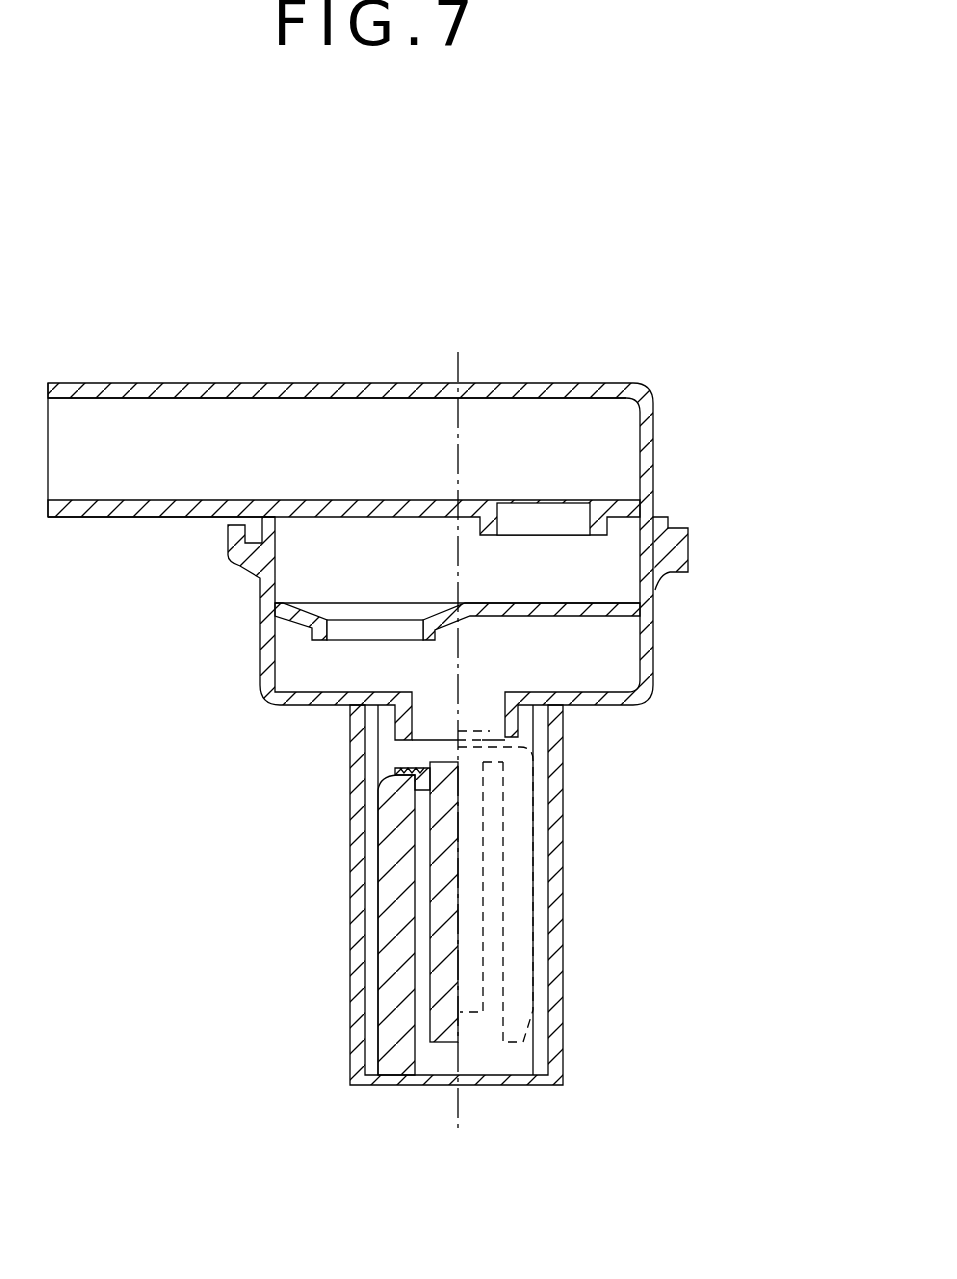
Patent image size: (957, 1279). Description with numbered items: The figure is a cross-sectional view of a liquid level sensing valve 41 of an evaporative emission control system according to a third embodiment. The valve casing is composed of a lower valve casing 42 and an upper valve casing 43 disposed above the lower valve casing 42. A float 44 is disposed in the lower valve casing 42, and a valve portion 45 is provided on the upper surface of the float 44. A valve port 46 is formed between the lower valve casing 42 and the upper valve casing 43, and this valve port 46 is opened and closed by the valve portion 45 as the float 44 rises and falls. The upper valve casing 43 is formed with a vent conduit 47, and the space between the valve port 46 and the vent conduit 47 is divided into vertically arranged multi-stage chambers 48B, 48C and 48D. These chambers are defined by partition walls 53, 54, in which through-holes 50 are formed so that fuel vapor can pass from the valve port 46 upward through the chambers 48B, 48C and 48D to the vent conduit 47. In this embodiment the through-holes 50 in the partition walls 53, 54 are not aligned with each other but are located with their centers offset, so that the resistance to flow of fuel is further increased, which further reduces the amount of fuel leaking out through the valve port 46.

The liquid level sensing valve 41 is at (562, 908).
The lower valve casing 42 is at (357, 932).
The upper valve casing 43 is at (497, 383).
The float 44 is at (400, 960).
The valve portion 45 is at (400, 778).
The valve port 46 is at (416, 706).
The vent conduit 47 is at (153, 502).
The chamber 48B is at (577, 668).
The chamber 48C is at (555, 572).
The chamber 48D is at (543, 458).
The through-hole 50 is at (552, 523).
The partition wall 53 is at (348, 505).
The partition wall 54 is at (585, 620).